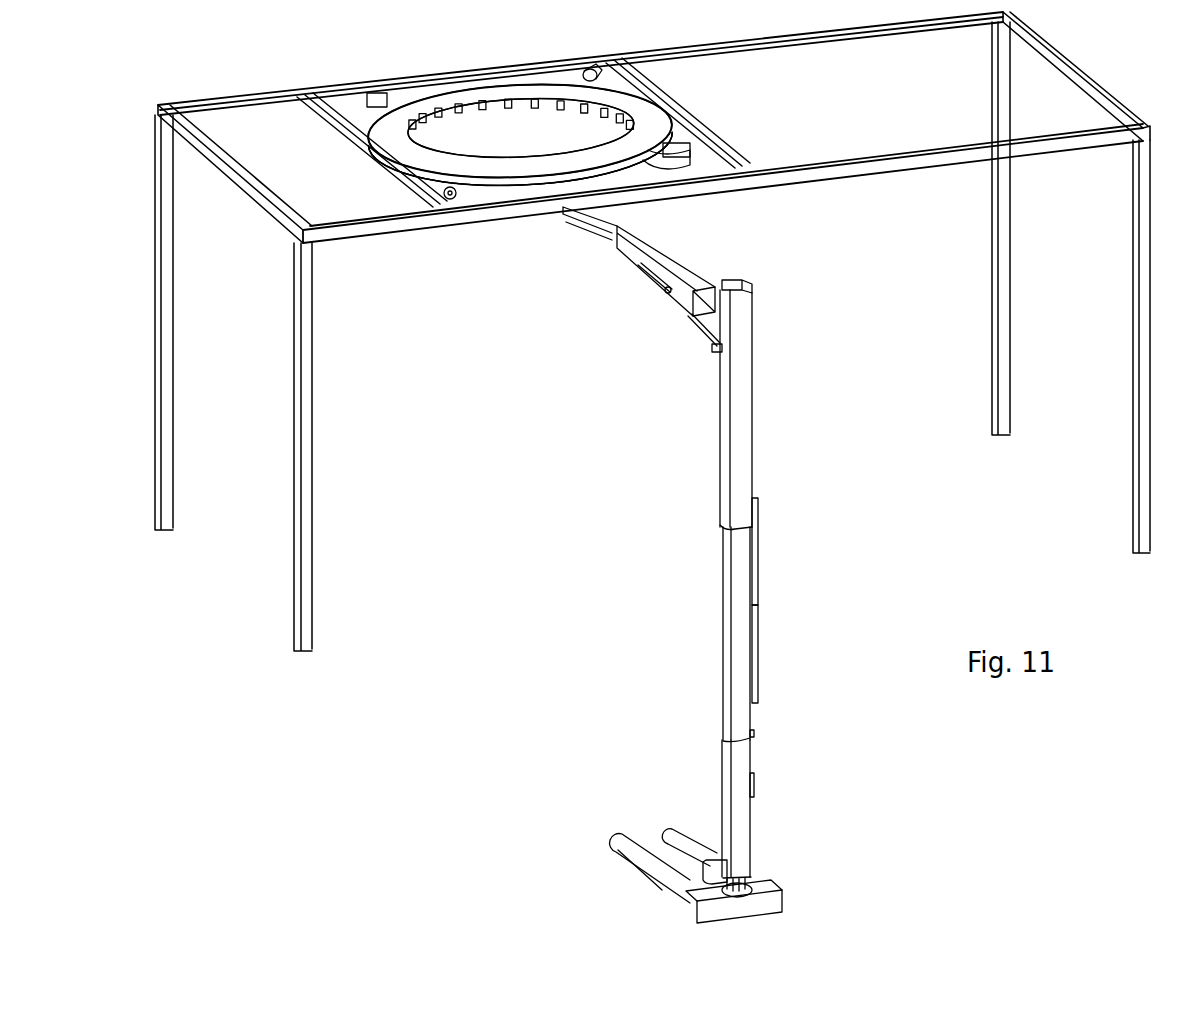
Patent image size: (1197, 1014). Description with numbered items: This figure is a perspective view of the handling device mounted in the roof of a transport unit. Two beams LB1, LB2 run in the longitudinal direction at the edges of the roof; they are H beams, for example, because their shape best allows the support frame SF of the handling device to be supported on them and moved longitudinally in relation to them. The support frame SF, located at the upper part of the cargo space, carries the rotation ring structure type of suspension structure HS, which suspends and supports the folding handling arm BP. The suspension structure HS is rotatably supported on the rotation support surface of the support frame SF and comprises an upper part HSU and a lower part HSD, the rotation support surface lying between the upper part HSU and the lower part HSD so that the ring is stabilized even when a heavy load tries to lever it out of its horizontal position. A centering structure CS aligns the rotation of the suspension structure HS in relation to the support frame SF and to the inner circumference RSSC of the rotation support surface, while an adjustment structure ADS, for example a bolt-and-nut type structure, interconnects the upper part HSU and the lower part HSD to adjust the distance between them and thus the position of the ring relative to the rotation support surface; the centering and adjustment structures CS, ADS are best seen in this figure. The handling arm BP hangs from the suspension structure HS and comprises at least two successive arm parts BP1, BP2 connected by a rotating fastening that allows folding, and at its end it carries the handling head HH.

The longitudinal roof beam LB1 is at (788, 47).
The longitudinal roof beam LB2 is at (888, 167).
The suspension structure HS is at (388, 149).
The centering structure CS is at (507, 108).
The support frame SF is at (683, 112).
The adjustment structure ADS is at (493, 110).
The holding structure lower part HSD is at (488, 155).
The upper part of the suspension structure HSU is at (546, 175).
The inner circumference of the rotation support surface RSSC is at (517, 162).
The arm part BP1 is at (630, 291).
The handling arm BP is at (640, 433).
The arm part BP2 is at (838, 505).
The handling head HH is at (668, 884).